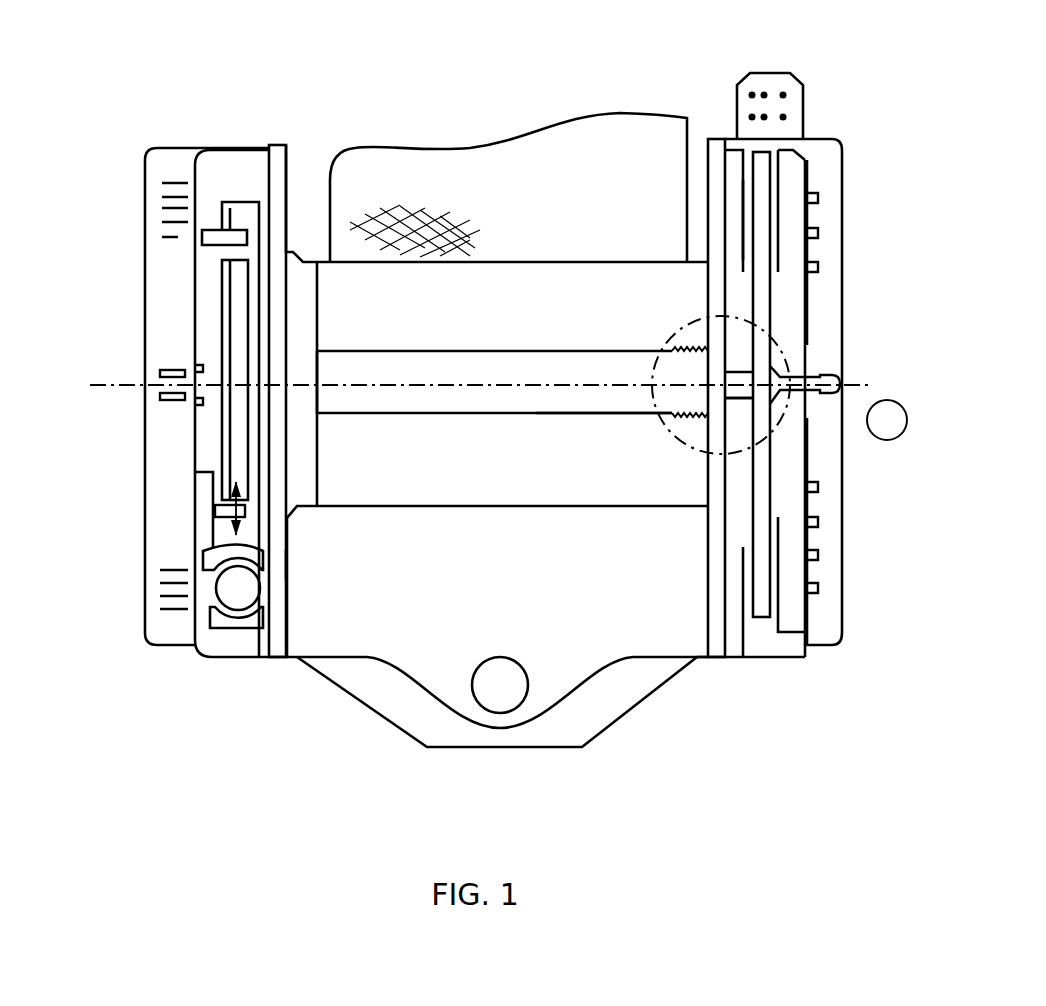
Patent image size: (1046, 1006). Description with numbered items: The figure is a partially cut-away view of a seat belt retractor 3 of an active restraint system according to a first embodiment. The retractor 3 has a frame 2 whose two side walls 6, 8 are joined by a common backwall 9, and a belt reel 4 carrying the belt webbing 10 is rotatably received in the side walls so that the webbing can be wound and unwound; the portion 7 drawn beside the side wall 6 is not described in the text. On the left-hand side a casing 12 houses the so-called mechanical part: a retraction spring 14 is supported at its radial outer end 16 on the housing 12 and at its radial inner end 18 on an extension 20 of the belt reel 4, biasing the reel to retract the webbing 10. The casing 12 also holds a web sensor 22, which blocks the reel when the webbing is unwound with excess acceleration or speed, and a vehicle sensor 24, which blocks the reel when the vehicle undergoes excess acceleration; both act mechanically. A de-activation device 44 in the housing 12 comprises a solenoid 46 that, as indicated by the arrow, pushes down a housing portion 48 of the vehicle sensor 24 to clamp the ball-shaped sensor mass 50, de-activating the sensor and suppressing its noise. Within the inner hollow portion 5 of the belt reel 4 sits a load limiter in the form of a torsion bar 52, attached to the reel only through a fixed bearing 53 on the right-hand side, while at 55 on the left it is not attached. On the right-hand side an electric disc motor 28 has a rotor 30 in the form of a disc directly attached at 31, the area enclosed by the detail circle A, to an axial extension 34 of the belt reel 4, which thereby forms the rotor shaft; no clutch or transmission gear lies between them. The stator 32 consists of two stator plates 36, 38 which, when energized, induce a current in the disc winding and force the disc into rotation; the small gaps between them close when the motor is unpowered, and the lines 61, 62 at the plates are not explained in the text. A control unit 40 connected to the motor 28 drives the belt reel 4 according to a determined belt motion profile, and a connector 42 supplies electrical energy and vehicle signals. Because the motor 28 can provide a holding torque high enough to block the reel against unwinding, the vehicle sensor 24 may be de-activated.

The frame 2 is at (683, 630).
The seat belt retractor 3 is at (405, 750).
The belt reel 4 is at (358, 295).
The inner hollow portion 5 is at (414, 412).
The side wall 6 is at (277, 143).
The housing flange 7 is at (303, 293).
The side wall 8 is at (708, 158).
The backwall 9 is at (565, 660).
The belt webbing 10 is at (557, 162).
The casing 12 is at (207, 148).
The retraction spring 14 is at (158, 200).
The outer end 16 is at (170, 152).
The radial inner end 18 is at (165, 368).
The extension 20 is at (160, 390).
The web sensor 22 is at (175, 287).
The vehicle sensor 24 is at (205, 587).
The electric disc motor 28 is at (836, 297).
The rotor 30 is at (758, 315).
The shaft and hub connecting means 31 is at (747, 367).
The stator 32 is at (795, 659).
The axial extension 34 is at (749, 407).
The stator plate 36 is at (737, 165).
The stator plate 38 is at (795, 172).
The control unit 40 is at (827, 232).
The connector 42 is at (805, 93).
The de-activation device 44 is at (202, 497).
The solenoid 46 is at (220, 510).
The housing portion 48 is at (283, 564).
The sensor mass 50 is at (237, 604).
The torsion bar 52 is at (536, 401).
The fixed bearing 53 is at (672, 413).
The unattached portion 55 is at (321, 394).
The rail 61 is at (748, 210).
The rail 62 is at (775, 233).
The detail A is at (788, 402).